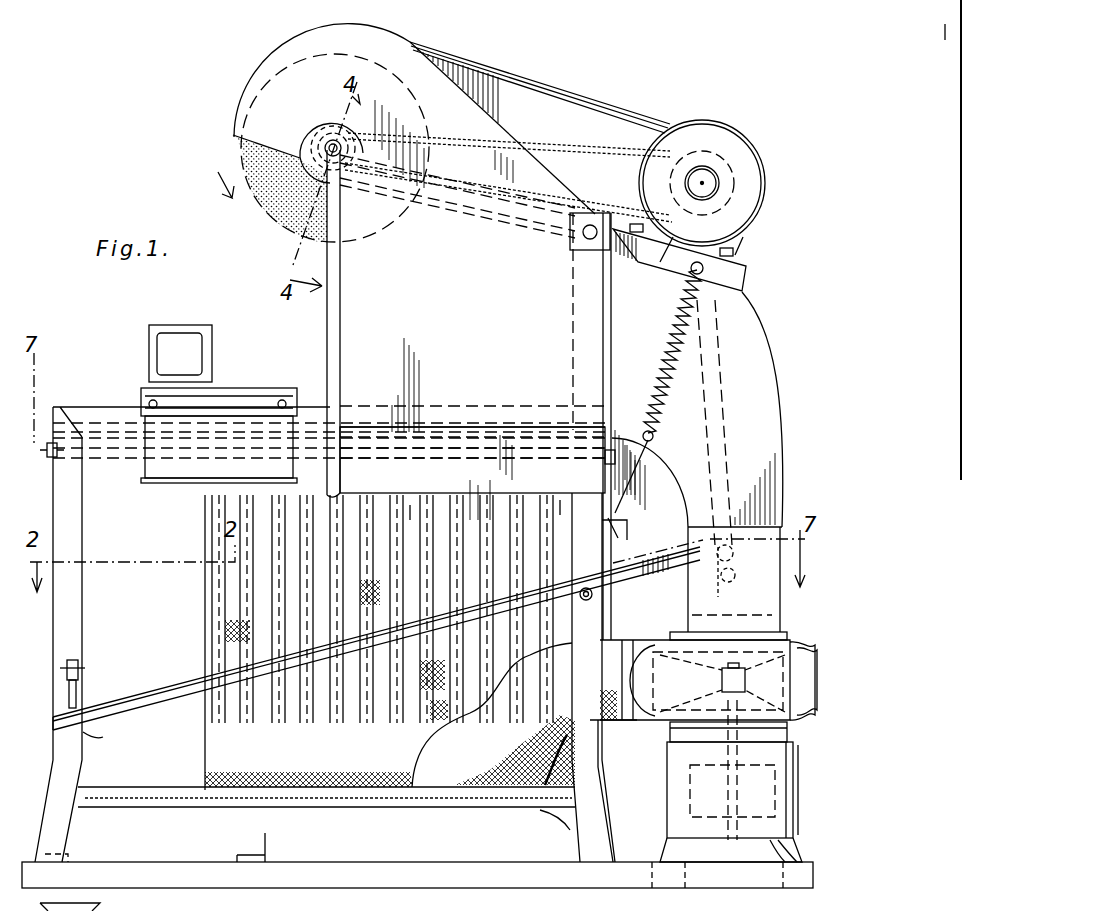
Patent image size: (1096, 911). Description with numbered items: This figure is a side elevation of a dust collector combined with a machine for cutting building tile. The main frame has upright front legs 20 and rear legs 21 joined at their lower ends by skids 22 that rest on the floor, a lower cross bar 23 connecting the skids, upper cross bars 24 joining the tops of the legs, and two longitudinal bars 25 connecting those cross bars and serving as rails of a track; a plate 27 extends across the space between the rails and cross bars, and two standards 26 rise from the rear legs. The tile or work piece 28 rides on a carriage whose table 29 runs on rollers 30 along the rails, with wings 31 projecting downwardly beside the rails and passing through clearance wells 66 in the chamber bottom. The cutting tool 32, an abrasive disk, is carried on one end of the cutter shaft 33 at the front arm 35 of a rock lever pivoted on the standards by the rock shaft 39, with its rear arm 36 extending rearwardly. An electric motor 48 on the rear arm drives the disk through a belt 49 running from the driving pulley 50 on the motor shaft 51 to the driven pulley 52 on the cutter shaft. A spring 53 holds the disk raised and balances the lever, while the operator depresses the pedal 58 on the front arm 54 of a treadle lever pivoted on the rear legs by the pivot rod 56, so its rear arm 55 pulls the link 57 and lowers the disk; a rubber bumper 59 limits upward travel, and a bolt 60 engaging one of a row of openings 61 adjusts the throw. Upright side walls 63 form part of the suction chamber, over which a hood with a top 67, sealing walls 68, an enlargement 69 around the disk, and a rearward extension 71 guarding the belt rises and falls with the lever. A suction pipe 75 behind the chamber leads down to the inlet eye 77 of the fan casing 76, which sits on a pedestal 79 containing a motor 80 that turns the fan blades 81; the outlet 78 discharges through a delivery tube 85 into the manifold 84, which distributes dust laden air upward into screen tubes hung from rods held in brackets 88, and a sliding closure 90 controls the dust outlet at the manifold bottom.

The front legs 20 is at (55, 622).
The rear legs 21 is at (585, 842).
The skids 22 is at (417, 871).
The lower cross bar 23 is at (268, 840).
The upper front and rear cross bars 24 is at (55, 412).
The upper longitudinal bars 25 is at (78, 412).
The standards 26 is at (574, 314).
The pan or plate 27 is at (448, 424).
The work piece 28 is at (160, 326).
The table 29 is at (235, 394).
The rollers or guides 30 is at (157, 398).
The wings 31 is at (219, 451).
The cutting tool 32 is at (272, 220).
The cutter shaft 33 is at (322, 146).
The front arm 35 is at (488, 218).
The rear arm 36 is at (742, 282).
The rock shaft 39 is at (572, 240).
The electric motor 48 is at (745, 140).
The belt 49 is at (612, 151).
The driving pulley 50 is at (722, 181).
The motor shaft 51 is at (700, 183).
The driven pulley 52 is at (322, 126).
The spring 53 is at (706, 300).
The front arm of treadle lever 54 is at (168, 690).
The rear arm of treadle lever 55 is at (652, 580).
The pivot rod 56 is at (584, 607).
The link 57 is at (708, 327).
The pedal 58 is at (108, 702).
The rubber bumper 59 is at (66, 700).
The bolt 60 is at (733, 551).
The openings 61 is at (735, 575).
The side walls 63 is at (402, 372).
The clearance wells 66 is at (472, 473).
The hood top 67 is at (385, 60).
The sealing walls 68 is at (485, 128).
The hood enlargement 69 is at (272, 68).
The rearward extension 71 is at (526, 86).
The suction pipe 75 is at (697, 409).
The fan casing 76 is at (703, 680).
The inlet eye 77 is at (770, 610).
The fan outlet 78 is at (642, 724).
The pedestal 79 is at (668, 850).
The motor 80 is at (698, 792).
The fan blades 81 is at (661, 688).
The manifold 84 is at (390, 751).
The delivery tube 85 is at (492, 715).
The brackets 88 is at (52, 460).
The sliding closure 90 is at (538, 810).